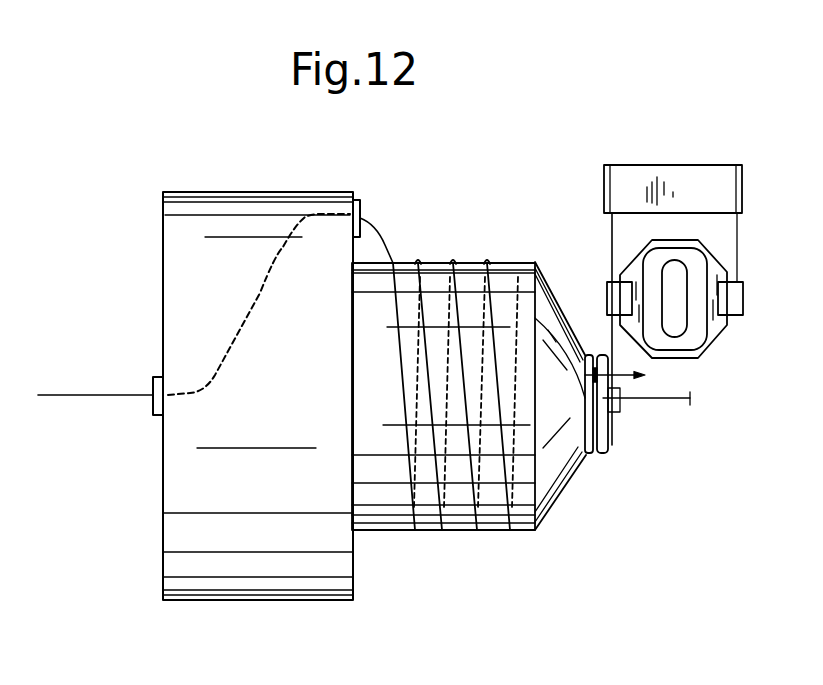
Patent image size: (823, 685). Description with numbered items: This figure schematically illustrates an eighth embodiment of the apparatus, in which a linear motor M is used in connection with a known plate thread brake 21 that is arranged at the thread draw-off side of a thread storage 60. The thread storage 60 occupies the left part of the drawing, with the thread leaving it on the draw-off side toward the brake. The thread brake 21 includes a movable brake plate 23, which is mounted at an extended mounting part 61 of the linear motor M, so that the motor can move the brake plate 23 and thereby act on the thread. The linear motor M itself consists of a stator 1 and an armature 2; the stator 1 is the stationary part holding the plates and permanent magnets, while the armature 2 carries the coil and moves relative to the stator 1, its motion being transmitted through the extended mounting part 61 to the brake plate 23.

The thread storage 60 is at (405, 608).
The thread brake 21 is at (595, 488).
The movable brake plate 23 is at (610, 438).
The extended mounting part 61 is at (608, 338).
The linear motor M is at (690, 150).
The armature 2 is at (720, 326).
The stator 1 is at (692, 264).